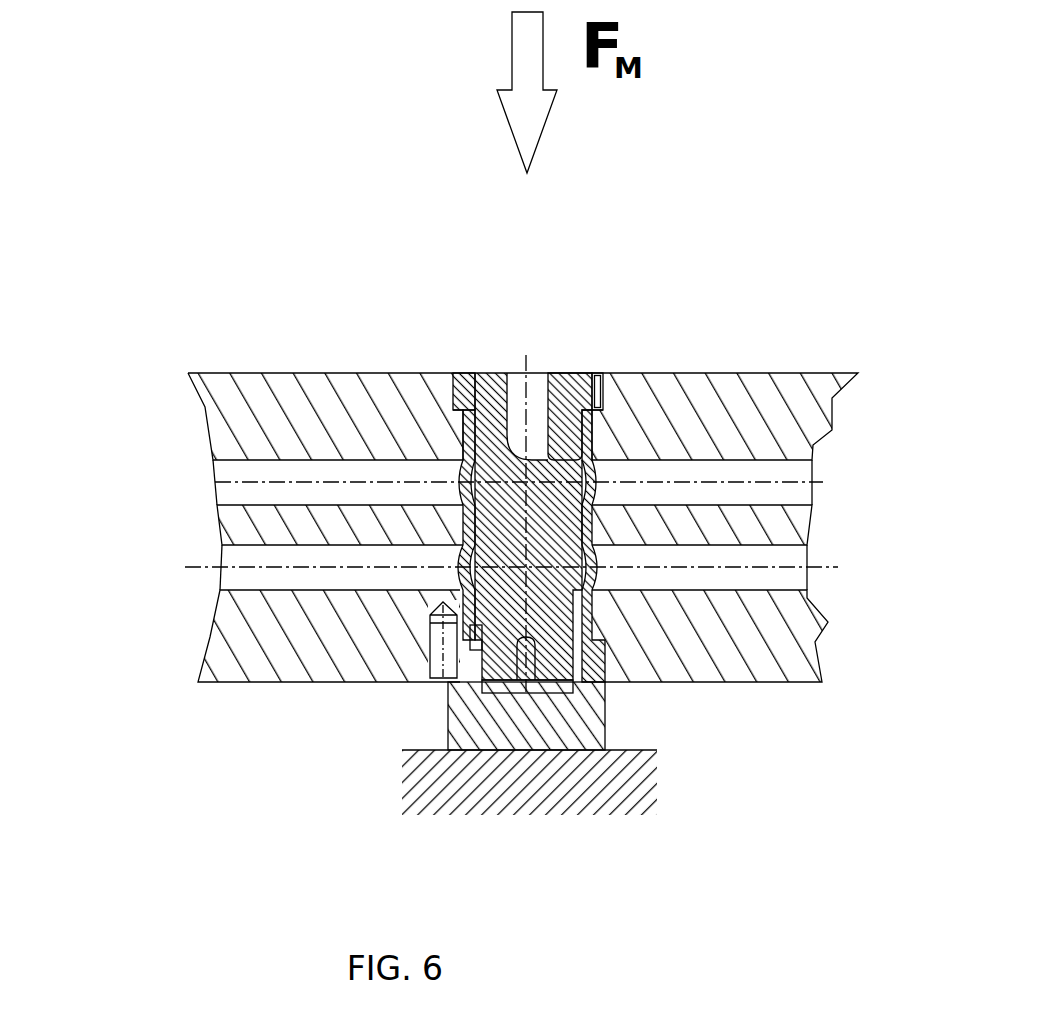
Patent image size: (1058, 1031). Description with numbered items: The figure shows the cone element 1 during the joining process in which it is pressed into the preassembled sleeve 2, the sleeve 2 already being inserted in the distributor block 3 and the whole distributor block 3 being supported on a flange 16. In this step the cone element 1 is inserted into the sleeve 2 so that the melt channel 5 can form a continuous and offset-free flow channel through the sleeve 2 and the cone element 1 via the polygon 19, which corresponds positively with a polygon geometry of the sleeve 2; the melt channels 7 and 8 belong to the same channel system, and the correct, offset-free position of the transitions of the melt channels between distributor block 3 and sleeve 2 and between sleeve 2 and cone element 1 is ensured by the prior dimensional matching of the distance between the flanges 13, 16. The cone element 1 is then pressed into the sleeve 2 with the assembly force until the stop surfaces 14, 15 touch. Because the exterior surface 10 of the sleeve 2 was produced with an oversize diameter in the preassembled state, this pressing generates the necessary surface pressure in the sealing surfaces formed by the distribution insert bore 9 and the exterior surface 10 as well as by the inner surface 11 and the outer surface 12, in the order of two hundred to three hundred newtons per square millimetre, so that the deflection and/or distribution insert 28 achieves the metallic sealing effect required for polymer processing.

The cone element 1 is at (452, 455).
The sleeve 2 is at (600, 528).
The distributor block 3 is at (273, 410).
The melt channel 5 is at (803, 492).
The melt channel 7 is at (257, 492).
The melt channel 8 is at (238, 573).
The distribution insert bore 9 is at (478, 440).
The exterior surface 10 is at (458, 450).
The inner surface 11 is at (577, 432).
The outer surface 12 is at (584, 440).
The flange 13 is at (493, 375).
The stop surface 14 is at (452, 422).
The stop surface 15 is at (597, 373).
The flange 16 is at (448, 683).
The polygon 19 is at (605, 683).
The deflection and/or distribution insert 28 is at (528, 347).